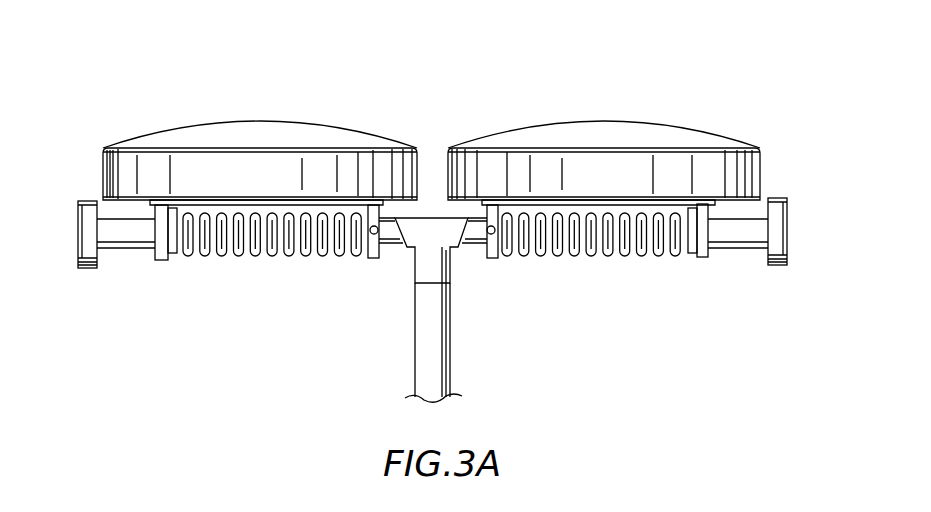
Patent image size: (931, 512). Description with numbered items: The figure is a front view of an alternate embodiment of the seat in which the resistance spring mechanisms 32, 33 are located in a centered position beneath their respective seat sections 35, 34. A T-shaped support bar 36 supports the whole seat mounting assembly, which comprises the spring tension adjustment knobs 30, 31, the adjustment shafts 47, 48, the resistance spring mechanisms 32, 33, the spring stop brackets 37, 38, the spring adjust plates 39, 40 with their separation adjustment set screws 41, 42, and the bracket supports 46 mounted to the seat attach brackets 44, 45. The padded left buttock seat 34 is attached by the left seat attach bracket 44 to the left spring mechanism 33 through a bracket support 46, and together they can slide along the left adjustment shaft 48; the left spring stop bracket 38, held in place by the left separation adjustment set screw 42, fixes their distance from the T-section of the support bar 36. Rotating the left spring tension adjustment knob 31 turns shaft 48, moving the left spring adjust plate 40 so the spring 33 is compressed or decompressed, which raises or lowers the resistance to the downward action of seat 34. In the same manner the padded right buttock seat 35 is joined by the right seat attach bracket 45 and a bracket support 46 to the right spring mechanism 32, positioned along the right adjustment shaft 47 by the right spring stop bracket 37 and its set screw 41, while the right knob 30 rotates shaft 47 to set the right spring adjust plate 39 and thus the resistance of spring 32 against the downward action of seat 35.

The right spring tension adjustment knob 30 is at (91, 268).
The left spring tension adjustment knob 31 is at (777, 265).
The right spring mechanism 32 is at (248, 258).
The left spring mechanism 33 is at (570, 257).
The left buttock seat 34 is at (693, 138).
The right buttock seat 35 is at (195, 140).
The T-shaped support bar 36 is at (432, 350).
The right spring stop bracket 37 is at (371, 259).
The left spring stop bracket 38 is at (496, 259).
The right spring adjust plate 39 is at (162, 262).
The left spring adjust plate 40 is at (702, 258).
The right separation adjustment set screw 41 is at (382, 243).
The left separation adjustment set screw 42 is at (484, 243).
The left seat attach bracket 44 is at (612, 204).
The right seat attach bracket 45 is at (240, 208).
The bracket support 46 is at (168, 213).
The right adjustment shaft 47 is at (123, 232).
The left adjustment shaft 48 is at (740, 229).